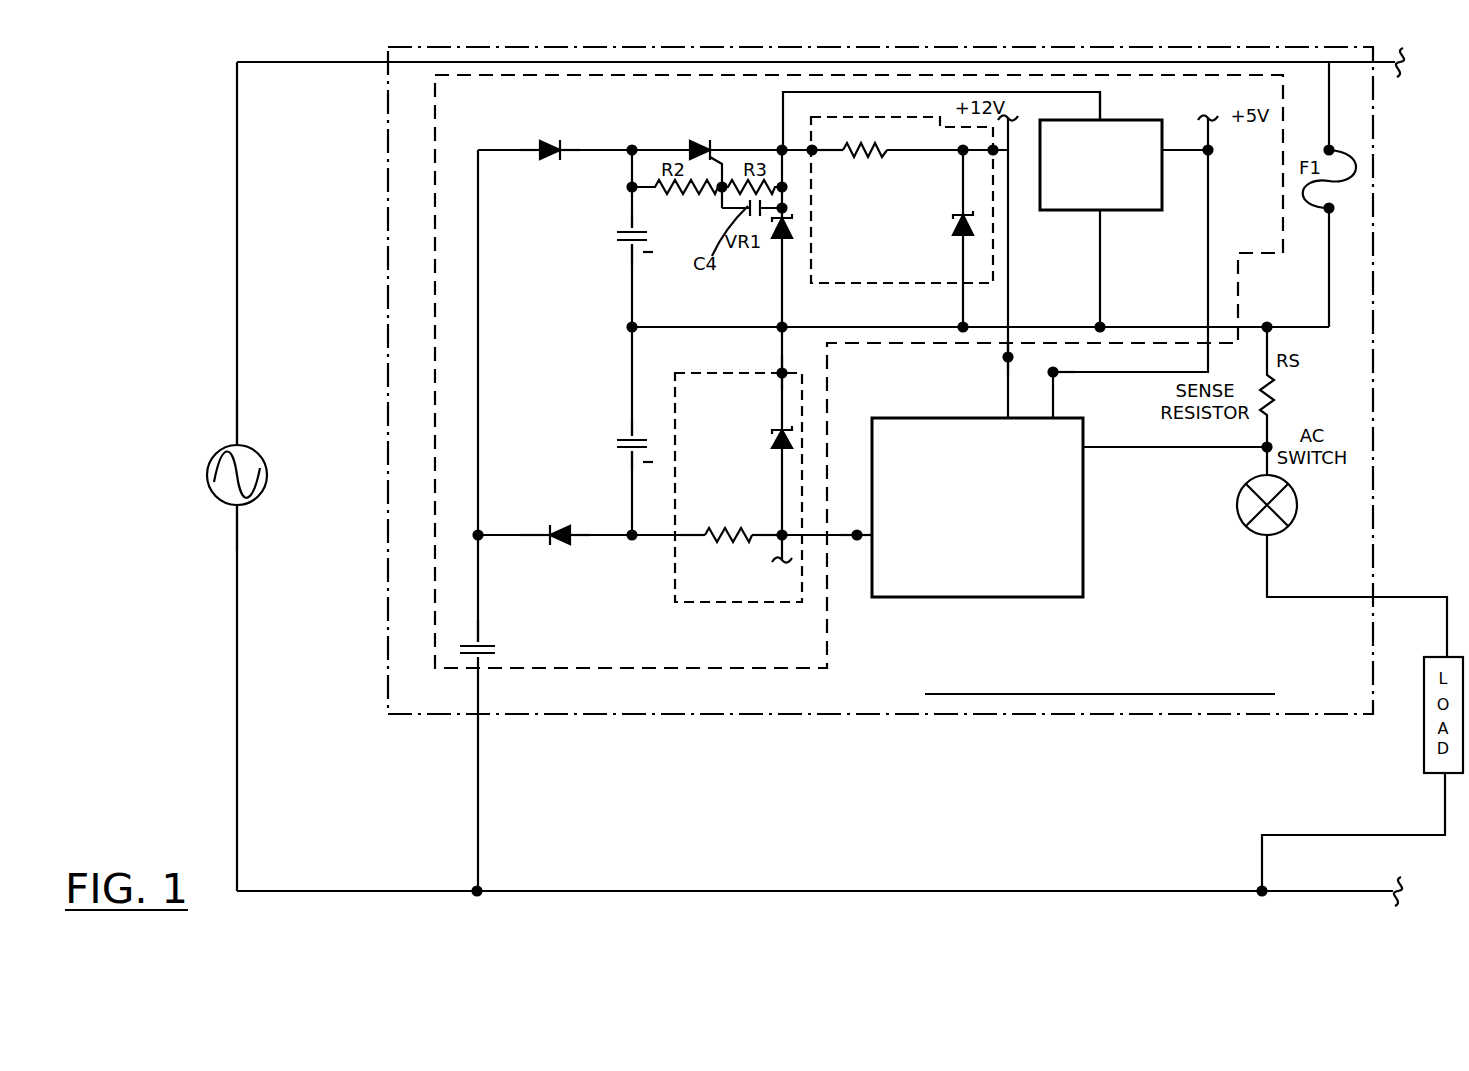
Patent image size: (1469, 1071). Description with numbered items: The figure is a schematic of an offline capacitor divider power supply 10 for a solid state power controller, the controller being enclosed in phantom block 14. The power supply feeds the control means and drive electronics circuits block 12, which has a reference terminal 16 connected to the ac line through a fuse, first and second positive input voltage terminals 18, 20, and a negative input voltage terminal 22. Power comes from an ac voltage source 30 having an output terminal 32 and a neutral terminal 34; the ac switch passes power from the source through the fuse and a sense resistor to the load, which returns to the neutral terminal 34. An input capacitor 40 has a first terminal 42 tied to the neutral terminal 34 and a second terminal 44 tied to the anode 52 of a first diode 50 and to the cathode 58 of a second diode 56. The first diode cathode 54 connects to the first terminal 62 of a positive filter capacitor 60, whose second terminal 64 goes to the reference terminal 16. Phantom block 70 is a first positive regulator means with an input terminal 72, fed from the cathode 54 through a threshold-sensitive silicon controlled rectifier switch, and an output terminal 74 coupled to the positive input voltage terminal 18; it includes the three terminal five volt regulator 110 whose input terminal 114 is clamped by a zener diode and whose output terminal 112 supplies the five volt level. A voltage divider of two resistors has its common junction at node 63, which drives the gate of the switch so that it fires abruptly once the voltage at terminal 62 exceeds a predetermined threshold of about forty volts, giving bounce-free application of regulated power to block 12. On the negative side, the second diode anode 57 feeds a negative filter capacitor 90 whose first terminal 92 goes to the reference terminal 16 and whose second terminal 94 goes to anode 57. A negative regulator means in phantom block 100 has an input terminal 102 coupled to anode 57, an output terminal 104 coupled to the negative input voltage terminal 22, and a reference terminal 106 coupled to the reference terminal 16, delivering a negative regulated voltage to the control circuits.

The offline capacitor divider power supply 10 is at (764, 649).
The control means and drive electronics circuits block 12 is at (1037, 451).
The solid state power controller phantom block 14 is at (764, 708).
The reference terminal 16 is at (962, 326).
The first positive input voltage terminal 18 is at (1006, 358).
The second positive input voltage terminal 20 is at (1054, 371).
The negative input voltage terminal 22 is at (856, 535).
The ac voltage source 30 is at (240, 500).
The output terminal 32 is at (237, 420).
The neutral terminal 34 is at (237, 520).
The input capacitor 40 is at (495, 647).
The input capacitor first terminal 42 is at (495, 660).
The input capacitor second terminal 44 is at (478, 630).
The first diode 50 is at (541, 159).
The first diode anode 52 is at (538, 149).
The first diode cathode 54 is at (563, 152).
The second diode 56 is at (561, 526).
The second diode anode 57 is at (575, 538).
The second diode cathode 58 is at (540, 534).
The positive filter capacitor 60 is at (620, 233).
The positive filter capacitor first terminal 62 is at (628, 227).
The node 63 is at (720, 190).
The positive filter capacitor second terminal 64 is at (630, 252).
The first positive regulator means 70 is at (827, 260).
The positive regulator input terminal 72 is at (814, 153).
The positive regulator output terminal 74 is at (992, 149).
The negative filter capacitor 90 is at (625, 442).
The negative filter capacitor first terminal 92 is at (631, 435).
The negative filter capacitor second terminal 94 is at (640, 453).
The negative regulator means 100 is at (706, 406).
The negative regulator input terminal 102 is at (686, 538).
The negative regulator output terminal 104 is at (781, 535).
The negative regulator reference terminal 106 is at (781, 372).
The three terminal +5 V regulator 110 is at (1140, 127).
The regulator output terminal 112 is at (1185, 137).
The regulator input terminal 114 is at (1100, 112).